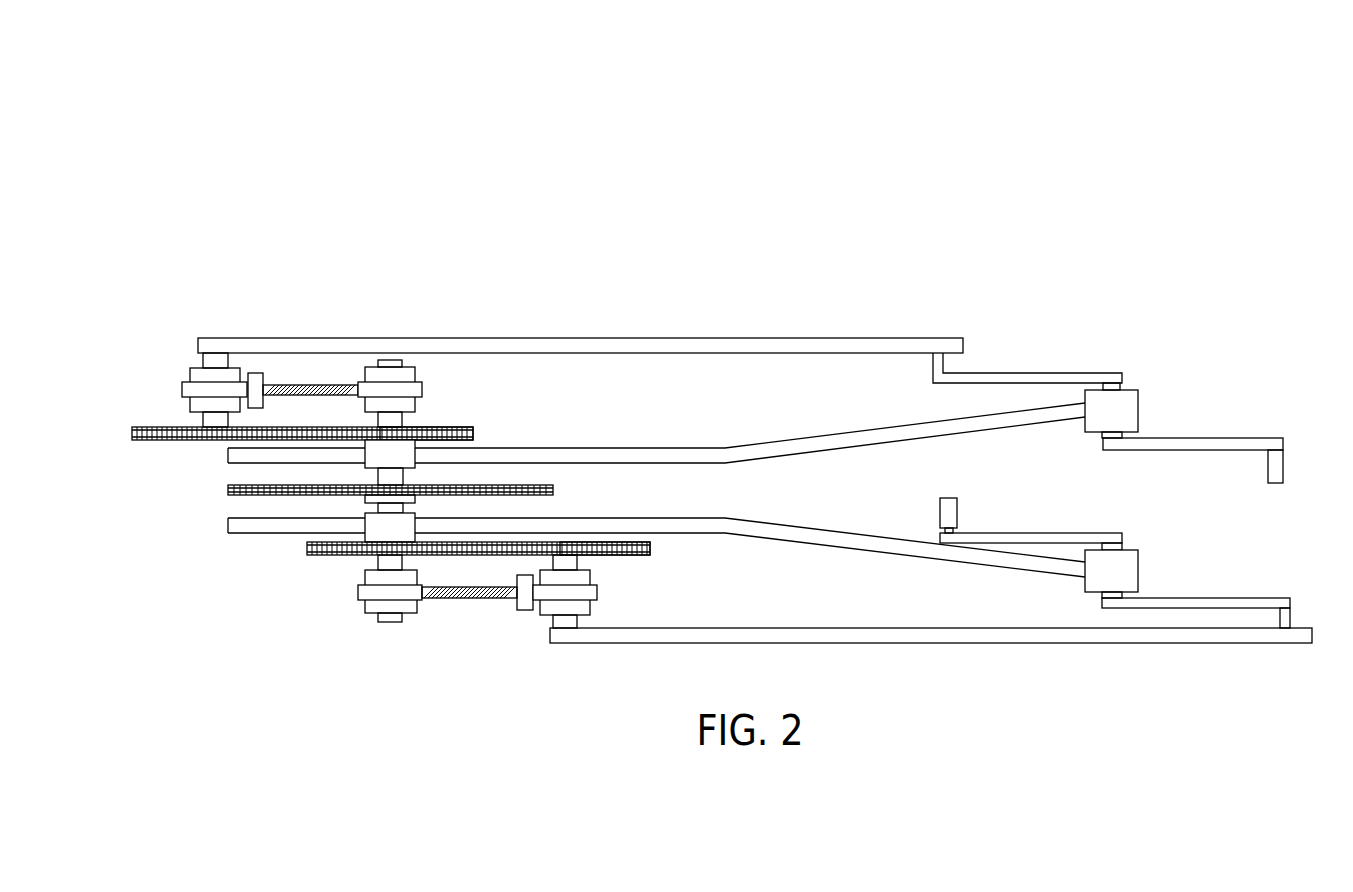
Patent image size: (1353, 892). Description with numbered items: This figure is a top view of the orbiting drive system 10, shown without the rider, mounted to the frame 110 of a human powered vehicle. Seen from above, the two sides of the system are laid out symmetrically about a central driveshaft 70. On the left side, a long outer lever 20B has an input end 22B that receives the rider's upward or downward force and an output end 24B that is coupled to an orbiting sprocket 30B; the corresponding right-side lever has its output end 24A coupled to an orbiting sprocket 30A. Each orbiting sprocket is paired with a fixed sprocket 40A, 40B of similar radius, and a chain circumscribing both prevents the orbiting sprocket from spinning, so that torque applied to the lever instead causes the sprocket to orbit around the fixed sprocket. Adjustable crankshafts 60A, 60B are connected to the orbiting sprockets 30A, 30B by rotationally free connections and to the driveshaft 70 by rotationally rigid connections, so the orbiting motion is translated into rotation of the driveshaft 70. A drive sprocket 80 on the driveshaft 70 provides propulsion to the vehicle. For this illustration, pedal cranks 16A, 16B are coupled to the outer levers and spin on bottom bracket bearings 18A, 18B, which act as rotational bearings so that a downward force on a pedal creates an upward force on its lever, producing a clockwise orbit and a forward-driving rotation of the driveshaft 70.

The orbiting drive system 10 is at (540, 178).
The pedal crank 16A is at (1230, 600).
The pedal crank 16B is at (1180, 438).
The bottom bracket bearing 18A is at (1112, 570).
The bottom bracket bearing 18B is at (1100, 405).
The outer lever 20B is at (662, 348).
The input end 22B is at (937, 342).
The output end 24A is at (587, 635).
The output end 24B is at (212, 347).
The orbiting sprocket 30A is at (597, 547).
The orbiting sprocket 30B is at (157, 427).
The fixed sprocket 40A is at (307, 552).
The fixed sprocket 40B is at (452, 427).
The adjustable crankshaft 60A is at (477, 598).
The adjustable crankshaft 60B is at (308, 385).
The driveshaft 70 is at (388, 622).
The drive sprocket 80 is at (227, 487).
The frame 110 is at (738, 455).